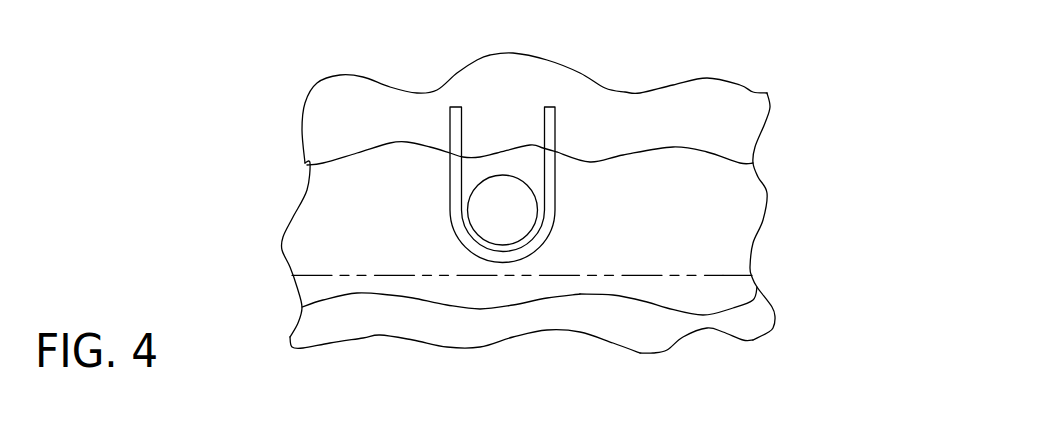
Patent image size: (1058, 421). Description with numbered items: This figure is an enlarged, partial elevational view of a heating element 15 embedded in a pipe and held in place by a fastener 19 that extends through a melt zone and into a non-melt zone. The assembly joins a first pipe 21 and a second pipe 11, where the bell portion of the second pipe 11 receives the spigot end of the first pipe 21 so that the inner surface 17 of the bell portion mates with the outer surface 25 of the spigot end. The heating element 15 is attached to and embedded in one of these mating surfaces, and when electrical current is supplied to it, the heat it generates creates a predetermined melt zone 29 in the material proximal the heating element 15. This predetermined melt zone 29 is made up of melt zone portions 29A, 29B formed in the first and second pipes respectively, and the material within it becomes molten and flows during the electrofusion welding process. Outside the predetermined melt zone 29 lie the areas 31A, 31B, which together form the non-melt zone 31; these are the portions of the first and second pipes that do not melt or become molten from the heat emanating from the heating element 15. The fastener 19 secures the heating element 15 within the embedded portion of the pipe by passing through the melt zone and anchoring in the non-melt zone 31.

The second pipe 11 is at (767, 193).
The heating element 15 is at (500, 175).
The inner surface 17 is at (656, 275).
The fastener 19 is at (557, 120).
The first pipe 21 is at (757, 287).
The outer surface 25 is at (727, 273).
The predetermined melt zone 29 is at (323, 232).
The melt zone portion 29A is at (330, 193).
The melt zone portion 29B is at (318, 288).
The non-melt zone 31 is at (740, 135).
The non-melt zone portion 31A is at (743, 113).
The non-melt zone portion 31B is at (753, 323).